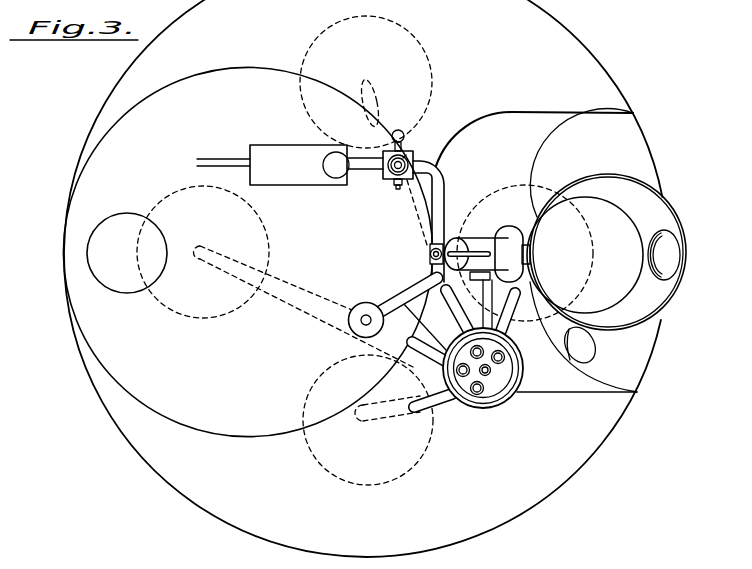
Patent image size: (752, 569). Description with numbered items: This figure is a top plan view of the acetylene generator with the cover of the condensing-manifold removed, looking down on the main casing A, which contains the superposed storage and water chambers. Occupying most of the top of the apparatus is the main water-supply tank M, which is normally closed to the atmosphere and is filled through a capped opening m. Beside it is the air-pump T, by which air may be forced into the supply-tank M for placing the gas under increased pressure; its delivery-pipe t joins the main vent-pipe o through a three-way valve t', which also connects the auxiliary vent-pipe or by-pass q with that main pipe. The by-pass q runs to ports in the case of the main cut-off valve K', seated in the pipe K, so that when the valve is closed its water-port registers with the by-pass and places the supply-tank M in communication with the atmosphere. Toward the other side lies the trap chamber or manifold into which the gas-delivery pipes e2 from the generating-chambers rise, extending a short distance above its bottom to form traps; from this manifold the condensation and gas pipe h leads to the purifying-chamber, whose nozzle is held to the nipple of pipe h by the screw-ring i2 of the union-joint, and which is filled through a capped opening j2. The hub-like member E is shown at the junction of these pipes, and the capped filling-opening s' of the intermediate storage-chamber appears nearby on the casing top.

The main casing A is at (182, 527).
The main water-supply tank M is at (192, 392).
The capped opening m is at (127, 253).
The air-pump T is at (280, 165).
The delivery-pipe t is at (382, 174).
The three-way valve t' is at (403, 124).
The main vent-pipe o is at (403, 157).
The auxiliary vent-pipe or by-pass q is at (441, 172).
The pipe K is at (420, 258).
The main cut-off valve K' is at (484, 238).
The screw-ring i2 is at (526, 242).
The capped opening j2 is at (650, 230).
The condensation and gas pipe h is at (486, 304).
The gas-delivery pipes e2 is at (516, 328).
The distributor head E is at (483, 368).
The capped filling-opening s' is at (579, 356).